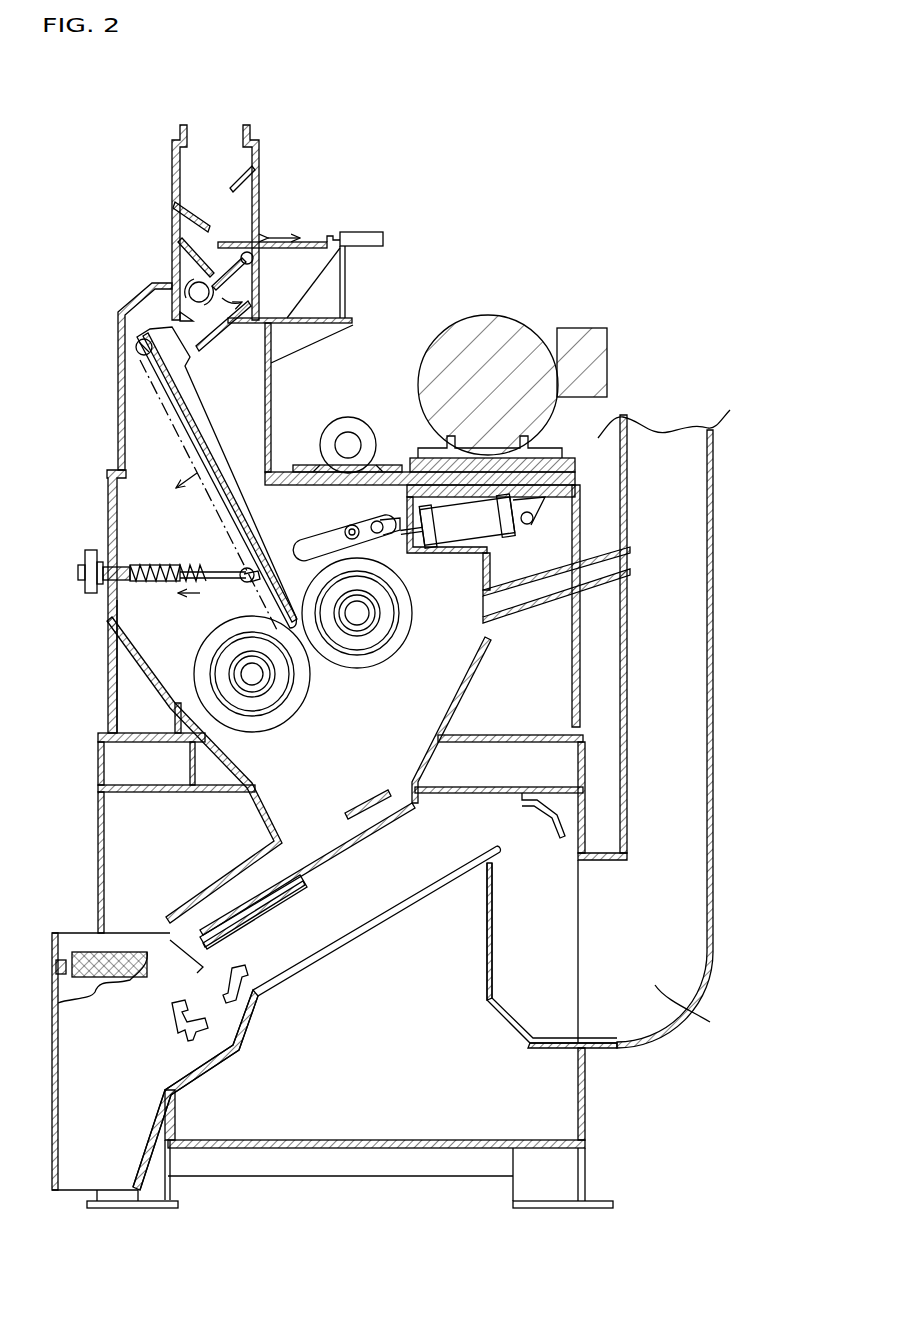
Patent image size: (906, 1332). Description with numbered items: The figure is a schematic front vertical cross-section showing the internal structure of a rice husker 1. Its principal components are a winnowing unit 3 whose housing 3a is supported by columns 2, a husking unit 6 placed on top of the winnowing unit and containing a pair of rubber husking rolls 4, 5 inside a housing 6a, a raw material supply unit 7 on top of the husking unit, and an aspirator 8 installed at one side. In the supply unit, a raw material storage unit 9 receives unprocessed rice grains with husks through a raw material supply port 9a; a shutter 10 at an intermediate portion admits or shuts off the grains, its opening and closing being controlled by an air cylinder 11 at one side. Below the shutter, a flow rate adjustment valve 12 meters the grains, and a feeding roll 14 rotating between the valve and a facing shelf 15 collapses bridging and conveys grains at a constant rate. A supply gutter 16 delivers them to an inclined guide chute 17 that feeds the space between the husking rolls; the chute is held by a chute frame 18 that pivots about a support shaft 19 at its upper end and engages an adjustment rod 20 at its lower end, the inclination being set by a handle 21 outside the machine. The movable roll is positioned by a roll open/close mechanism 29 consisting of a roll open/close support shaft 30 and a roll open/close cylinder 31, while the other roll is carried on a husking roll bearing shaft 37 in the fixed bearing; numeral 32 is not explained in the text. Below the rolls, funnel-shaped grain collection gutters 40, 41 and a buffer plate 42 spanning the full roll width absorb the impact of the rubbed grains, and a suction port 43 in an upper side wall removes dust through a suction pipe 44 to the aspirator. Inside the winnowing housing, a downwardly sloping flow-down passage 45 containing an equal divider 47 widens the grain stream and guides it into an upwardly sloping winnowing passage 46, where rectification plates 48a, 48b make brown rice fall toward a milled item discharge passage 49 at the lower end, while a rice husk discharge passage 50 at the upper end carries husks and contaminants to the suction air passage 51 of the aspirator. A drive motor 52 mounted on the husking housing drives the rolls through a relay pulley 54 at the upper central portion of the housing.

The rice husker 1 is at (537, 214).
The columns 2 is at (147, 1198).
The winnowing unit 3 is at (213, 864).
The housing of the winnowing unit 3a is at (98, 850).
The husking roll 4 is at (383, 651).
The husking roll 5 is at (276, 718).
The husking unit 6 is at (105, 495).
The housing of the husking unit 6a is at (108, 681).
The raw material supply unit 7 is at (116, 318).
The aspirator 8 is at (715, 526).
The raw material storage unit 9 is at (172, 140).
The raw material supply port 9a is at (215, 125).
The shutter 10 is at (230, 242).
The air cylinder 11 is at (355, 238).
The flow rate adjustment valve 12 is at (238, 287).
The feeding roll 14 is at (195, 288).
The shelf 15 is at (190, 258).
The supply gutter 16 is at (233, 347).
The guide chute 17 is at (198, 395).
The chute frame 18 is at (180, 403).
The support shaft 19 is at (136, 348).
The adjustment rod 20 is at (192, 570).
The handle 21 is at (86, 562).
The roll open/close mechanism 29 is at (363, 490).
The roll open/close support shaft 30 is at (352, 530).
The roll open/close cylinder 31 is at (480, 530).
The roller shaft 32 is at (358, 618).
The husking roll bearing shaft 37 is at (258, 676).
The grain collection gutter 40 is at (300, 812).
The grain collection gutter 41 is at (434, 777).
The buffer plate 42 is at (368, 782).
The suction port 43 is at (487, 609).
The suction pipe 44 is at (530, 608).
The flow-down passage 45 is at (340, 845).
The winnowing passage 46 is at (352, 926).
The equal divider 47 is at (280, 880).
The rectification plate 48a is at (240, 968).
The rectification plate 48b is at (185, 1035).
The milled item discharge passage 49 is at (117, 1164).
The rice husk discharge passage 50 is at (559, 939).
The suction air passage 51 is at (655, 985).
The drive motor 52 is at (503, 318).
The relay pulley 54 is at (349, 418).